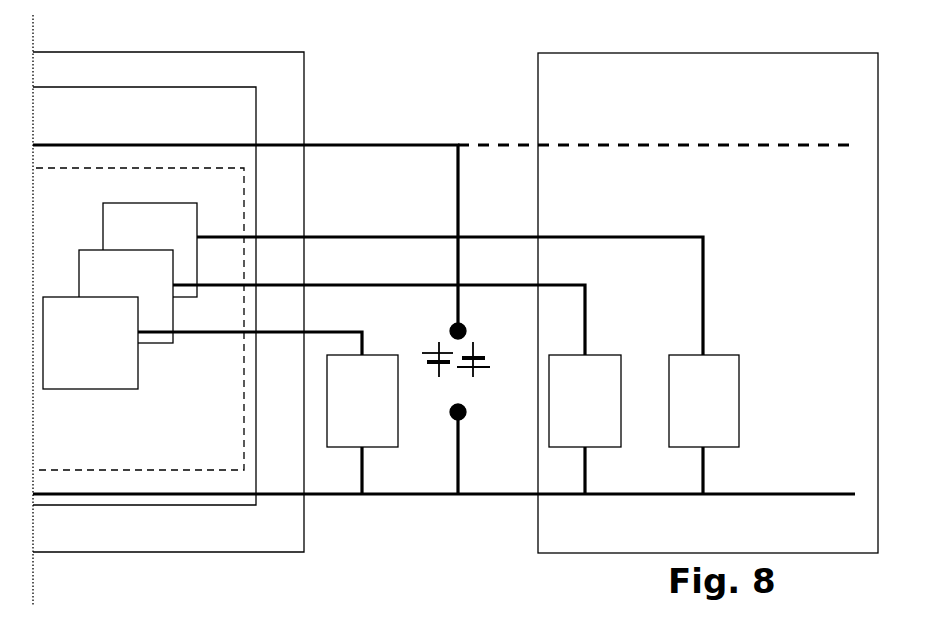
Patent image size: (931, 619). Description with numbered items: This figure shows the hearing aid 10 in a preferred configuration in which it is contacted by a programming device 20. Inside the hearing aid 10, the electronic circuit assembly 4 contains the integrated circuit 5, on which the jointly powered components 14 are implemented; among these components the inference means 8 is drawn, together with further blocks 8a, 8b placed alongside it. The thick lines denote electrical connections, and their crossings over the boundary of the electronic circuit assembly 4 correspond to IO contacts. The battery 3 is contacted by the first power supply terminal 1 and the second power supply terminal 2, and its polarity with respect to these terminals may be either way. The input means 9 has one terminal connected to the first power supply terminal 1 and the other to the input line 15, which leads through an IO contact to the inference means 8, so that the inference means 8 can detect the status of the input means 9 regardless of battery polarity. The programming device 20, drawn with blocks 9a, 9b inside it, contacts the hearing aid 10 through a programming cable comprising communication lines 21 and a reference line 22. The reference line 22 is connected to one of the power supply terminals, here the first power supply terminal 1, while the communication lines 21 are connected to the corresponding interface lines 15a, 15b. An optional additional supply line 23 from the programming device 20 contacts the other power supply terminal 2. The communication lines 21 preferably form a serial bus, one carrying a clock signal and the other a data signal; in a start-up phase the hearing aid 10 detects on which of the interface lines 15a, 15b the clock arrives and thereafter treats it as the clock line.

The first power supply terminal 1 is at (341, 495).
The second power supply terminal 2 is at (342, 144).
The battery 3 is at (422, 338).
The electronic circuit assembly 4 is at (275, 87).
The integrated circuit 5 is at (227, 122).
The inference means 8 is at (58, 332).
The control circuit 8a is at (93, 285).
The control circuit 8b is at (116, 238).
The input means 9 is at (341, 390).
The load / consumer 9a is at (563, 390).
The load / consumer 9b is at (683, 390).
The hearing aid 10 is at (437, 76).
The jointly powered components 14 is at (202, 204).
The input line 15 is at (286, 332).
The interface line 15a is at (312, 284).
The interface line 15b is at (318, 237).
The programming device 20 is at (837, 87).
The communication lines 21 is at (652, 237).
The reference line 22 is at (511, 495).
The additional supply line 23 is at (493, 145).